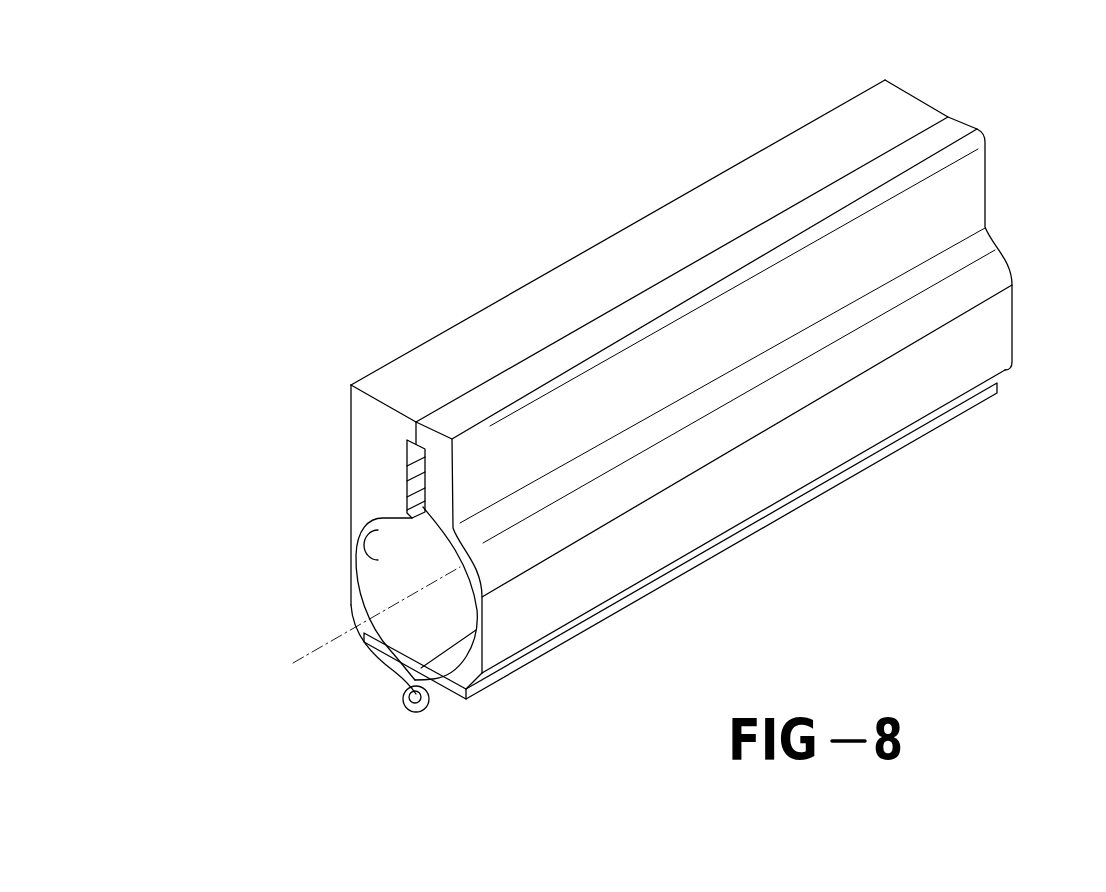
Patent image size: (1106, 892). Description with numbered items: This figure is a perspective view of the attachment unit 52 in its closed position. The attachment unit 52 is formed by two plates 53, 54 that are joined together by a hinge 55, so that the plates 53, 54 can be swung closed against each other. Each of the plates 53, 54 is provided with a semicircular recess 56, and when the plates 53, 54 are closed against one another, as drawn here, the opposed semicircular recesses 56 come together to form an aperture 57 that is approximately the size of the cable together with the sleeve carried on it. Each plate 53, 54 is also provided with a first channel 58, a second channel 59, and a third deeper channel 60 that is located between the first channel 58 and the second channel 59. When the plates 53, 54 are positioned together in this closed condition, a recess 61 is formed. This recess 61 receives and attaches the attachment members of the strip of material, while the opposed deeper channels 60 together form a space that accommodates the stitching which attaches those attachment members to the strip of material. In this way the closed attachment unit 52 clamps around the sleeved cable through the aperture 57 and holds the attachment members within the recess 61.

The attachment unit 52 is at (567, 198).
The plate 53 is at (806, 165).
The plate 54 is at (942, 212).
The hinge 55 is at (415, 697).
The semicircular recess 56 is at (366, 557).
The aperture 57 is at (393, 578).
The first channel 58 is at (405, 442).
The second channel 59 is at (404, 501).
The third deeper channel 60 is at (398, 471).
The recess 61 is at (405, 477).